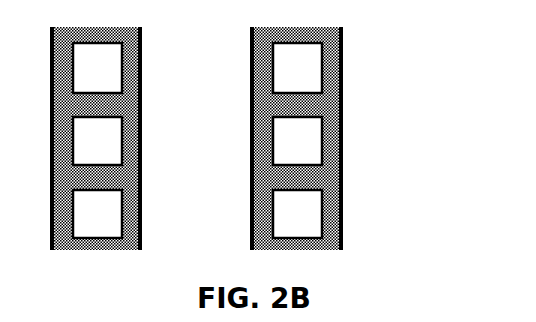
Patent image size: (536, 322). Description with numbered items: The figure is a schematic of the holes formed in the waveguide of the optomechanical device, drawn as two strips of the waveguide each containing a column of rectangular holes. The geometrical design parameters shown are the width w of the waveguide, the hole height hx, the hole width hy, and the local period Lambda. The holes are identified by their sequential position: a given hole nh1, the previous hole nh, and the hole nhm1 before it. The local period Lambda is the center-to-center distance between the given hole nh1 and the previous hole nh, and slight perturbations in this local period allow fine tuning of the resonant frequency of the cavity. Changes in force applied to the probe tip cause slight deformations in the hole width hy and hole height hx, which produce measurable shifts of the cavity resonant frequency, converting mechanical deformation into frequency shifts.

The width w is at (141, 259).
The hole height hx is at (113, 45).
The hole width hy is at (121, 152).
The hole of sequential number n_h+1 nh1 is at (310, 69).
The hole of sequential number n_h nh is at (310, 142).
The hole of sequential number n_h-1 nhm1 is at (310, 217).
The local period Lambda is at (357, 70).